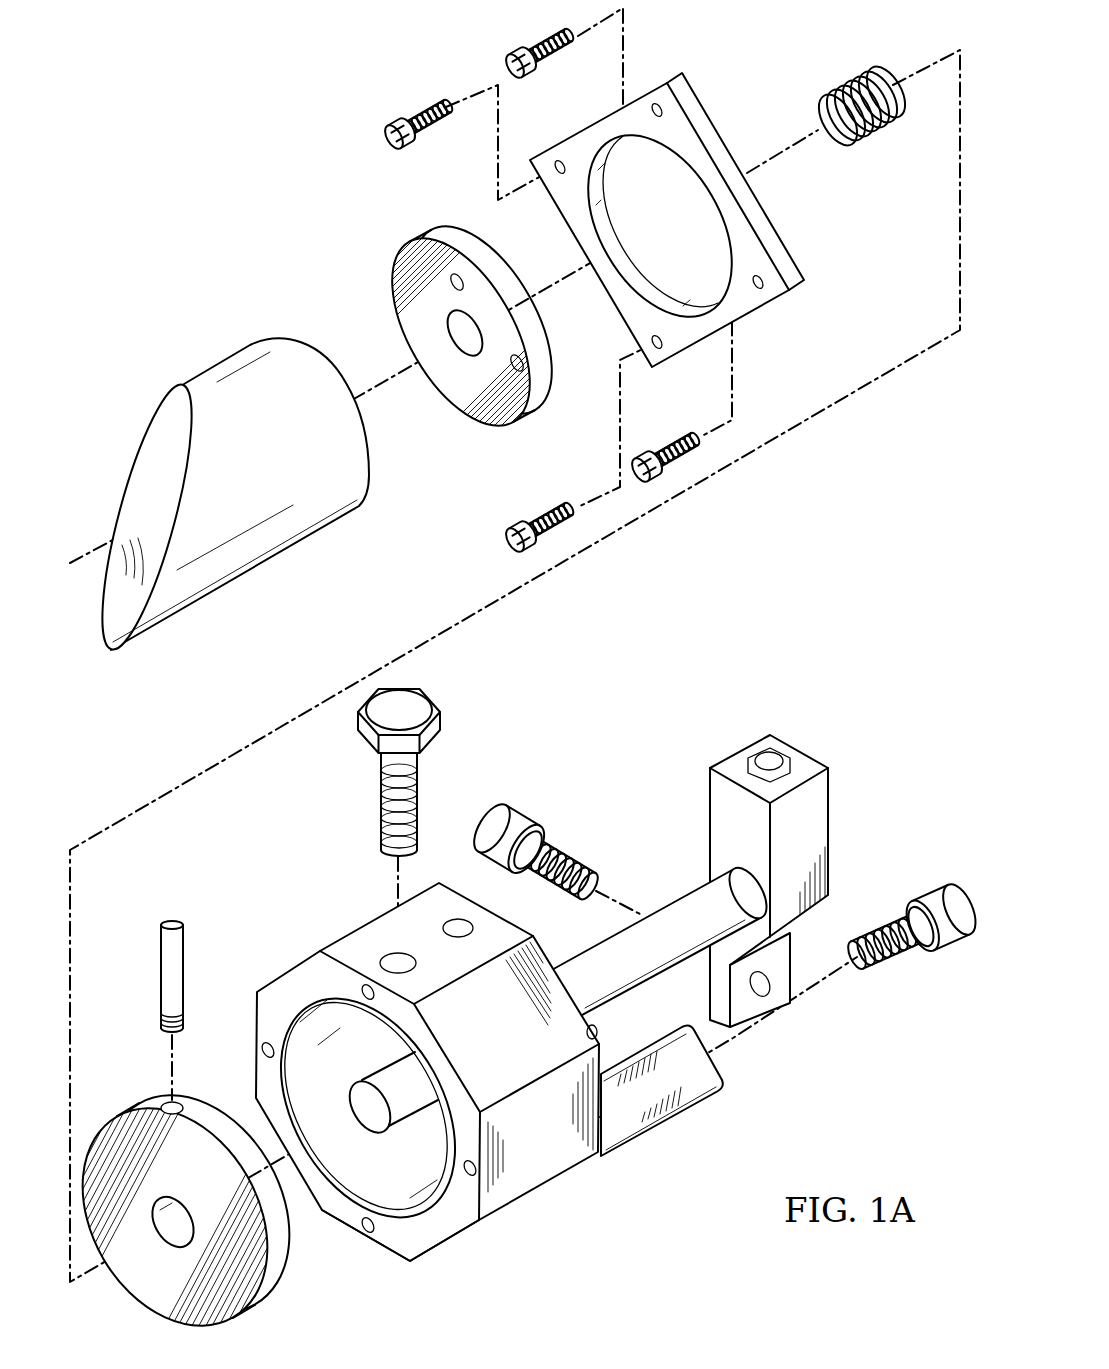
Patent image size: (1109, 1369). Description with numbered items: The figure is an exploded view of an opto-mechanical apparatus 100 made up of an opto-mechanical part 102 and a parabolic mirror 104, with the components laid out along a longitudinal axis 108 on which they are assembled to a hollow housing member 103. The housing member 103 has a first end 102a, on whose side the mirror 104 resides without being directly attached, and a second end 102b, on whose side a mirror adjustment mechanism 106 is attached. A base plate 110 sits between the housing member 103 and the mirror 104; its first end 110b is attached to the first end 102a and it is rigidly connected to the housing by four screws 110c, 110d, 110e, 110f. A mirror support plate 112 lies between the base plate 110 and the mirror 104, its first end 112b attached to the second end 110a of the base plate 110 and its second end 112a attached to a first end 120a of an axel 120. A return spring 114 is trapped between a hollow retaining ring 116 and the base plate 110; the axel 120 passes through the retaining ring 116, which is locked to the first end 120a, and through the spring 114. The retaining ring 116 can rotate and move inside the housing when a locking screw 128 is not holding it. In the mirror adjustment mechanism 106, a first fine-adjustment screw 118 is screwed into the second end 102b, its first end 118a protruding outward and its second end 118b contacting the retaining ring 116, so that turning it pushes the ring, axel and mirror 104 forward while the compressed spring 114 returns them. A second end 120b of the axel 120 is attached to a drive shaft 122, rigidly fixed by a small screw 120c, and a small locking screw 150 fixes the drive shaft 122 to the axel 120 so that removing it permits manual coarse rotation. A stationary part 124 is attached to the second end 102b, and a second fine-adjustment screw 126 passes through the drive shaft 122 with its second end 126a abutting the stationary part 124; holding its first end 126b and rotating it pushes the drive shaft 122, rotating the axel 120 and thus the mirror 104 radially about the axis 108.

The opto-mechanical apparatus 100 is at (188, 52).
The opto-mechanical part 102 is at (352, 920).
The first end 102a is at (432, 1242).
The second end 102b is at (585, 1034).
The hollow housing member 103 is at (542, 1185).
The parabolic mirror 104 is at (250, 348).
The mirror adjustment mechanism 106 is at (810, 635).
The longitudinal axis 108 is at (515, 645).
The base plate 110 is at (724, 98).
The second end 110a is at (762, 292).
The first end 110b is at (774, 220).
The screw 110c is at (512, 522).
The screw 110d is at (660, 484).
The screw 110e is at (394, 120).
The screw 110f is at (503, 63).
The mirror support plate 112 is at (382, 248).
The second end 112a is at (458, 412).
The first end 112b is at (549, 398).
The return spring 114 is at (830, 92).
The hollow retaining ring 116 is at (278, 1280).
The first fine-adjustment screw 118 is at (888, 933).
The first end 118a is at (950, 878).
The second end 118b is at (887, 942).
The axel 120 is at (628, 975).
The first end 120a is at (376, 1134).
The second end 120b is at (733, 858).
The small screw 120c is at (770, 748).
The drive shaft 122 is at (830, 790).
The stationary part 124 is at (632, 1140).
The second fine-adjustment screw 126 is at (568, 854).
The second end 126a is at (560, 869).
The first end 126b is at (492, 797).
The locking screw 128 is at (380, 812).
The small locking screw 150 is at (160, 970).